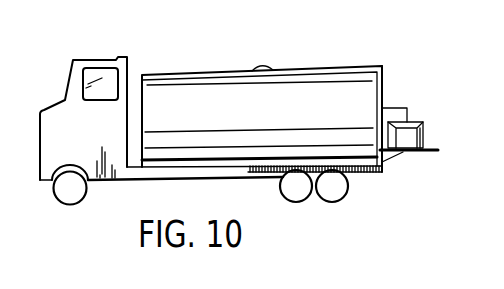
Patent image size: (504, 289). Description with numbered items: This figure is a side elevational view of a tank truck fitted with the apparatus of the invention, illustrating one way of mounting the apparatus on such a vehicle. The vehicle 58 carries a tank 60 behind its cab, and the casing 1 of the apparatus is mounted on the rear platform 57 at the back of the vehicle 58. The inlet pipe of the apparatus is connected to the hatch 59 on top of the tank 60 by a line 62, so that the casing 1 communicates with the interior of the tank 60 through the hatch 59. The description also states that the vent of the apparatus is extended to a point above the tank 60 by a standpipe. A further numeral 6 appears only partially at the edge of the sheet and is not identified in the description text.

The mobile apparatus (truck) 1 is at (433, 90).
The rear platform 57 is at (437, 153).
The truck cab 58 is at (118, 60).
The vent 59 is at (254, 66).
The enclosed body 60 is at (273, 115).
The body end wall 62 is at (384, 77).
The component (partially shown) 6 is at (497, 56).